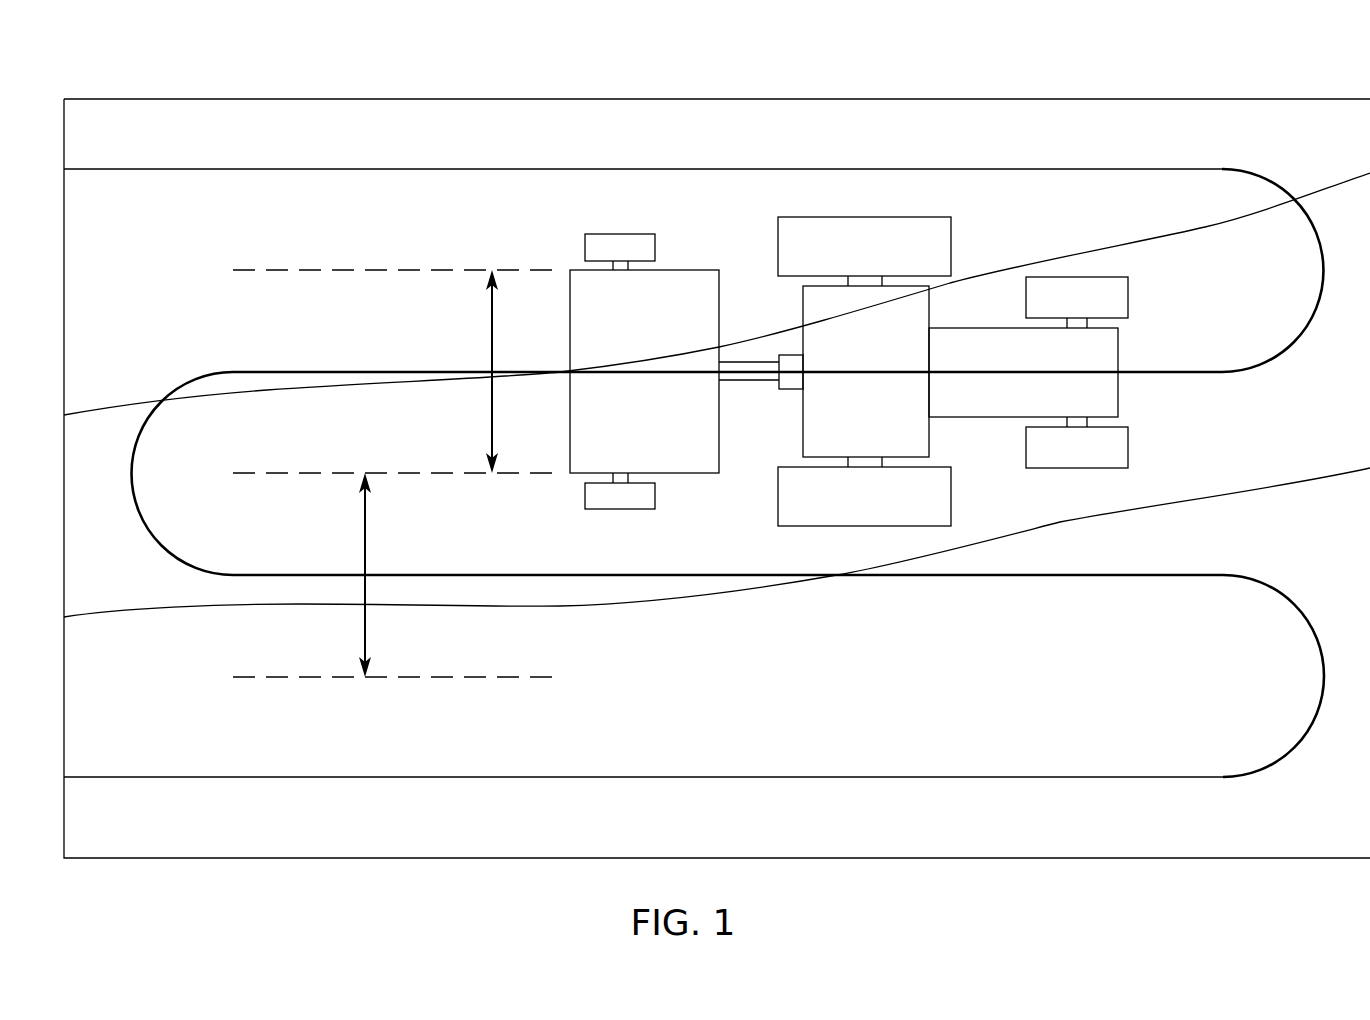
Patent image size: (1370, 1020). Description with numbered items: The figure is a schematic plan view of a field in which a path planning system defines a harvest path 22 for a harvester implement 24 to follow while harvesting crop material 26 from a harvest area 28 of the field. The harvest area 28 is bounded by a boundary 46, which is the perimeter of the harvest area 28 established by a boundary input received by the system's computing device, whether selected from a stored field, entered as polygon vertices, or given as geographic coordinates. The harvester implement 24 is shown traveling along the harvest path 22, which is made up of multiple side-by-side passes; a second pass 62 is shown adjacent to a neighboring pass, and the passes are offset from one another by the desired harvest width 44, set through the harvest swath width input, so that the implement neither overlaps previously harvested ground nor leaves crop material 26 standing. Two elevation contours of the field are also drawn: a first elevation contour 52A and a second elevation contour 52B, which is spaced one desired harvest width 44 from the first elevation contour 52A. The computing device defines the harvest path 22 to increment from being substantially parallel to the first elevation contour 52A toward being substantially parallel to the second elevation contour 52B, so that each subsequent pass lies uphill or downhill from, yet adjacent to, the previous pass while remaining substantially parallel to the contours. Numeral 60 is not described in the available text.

The boundary 46 is at (652, 100).
The harvest area 28 is at (1062, 70).
The crop material 26 is at (1302, 151).
The first swath path 60 is at (710, 573).
The harvest path 22 is at (1207, 574).
The second elevation contour 52B is at (1205, 227).
The first elevation contour 52A is at (1303, 490).
The desired harvest width 44 is at (490, 326).
The second pass 62 is at (681, 372).
The harvester implement 24 is at (818, 314).